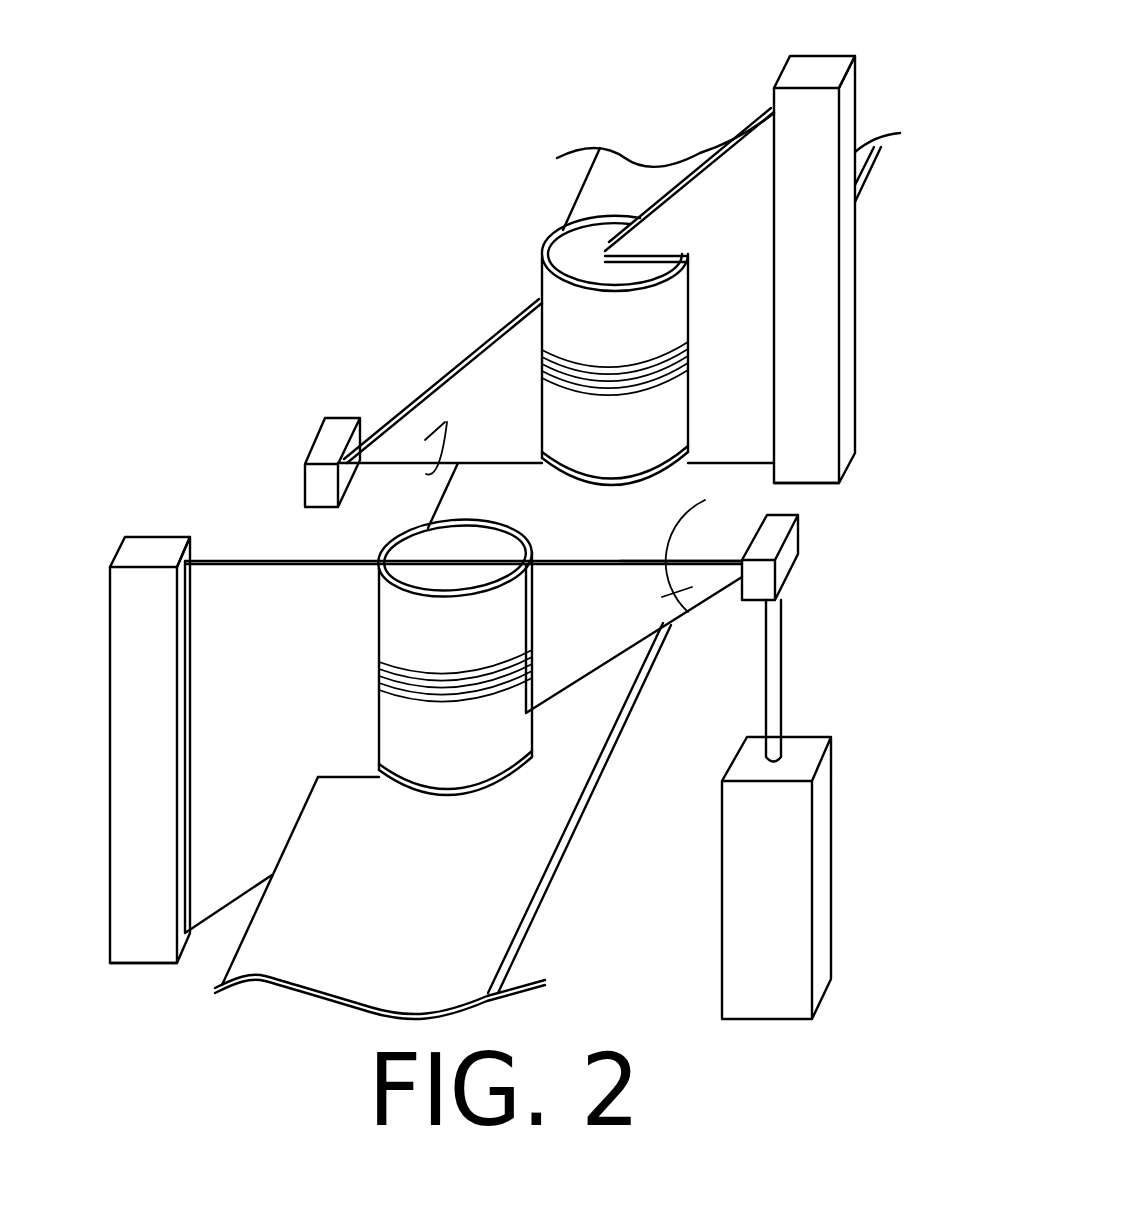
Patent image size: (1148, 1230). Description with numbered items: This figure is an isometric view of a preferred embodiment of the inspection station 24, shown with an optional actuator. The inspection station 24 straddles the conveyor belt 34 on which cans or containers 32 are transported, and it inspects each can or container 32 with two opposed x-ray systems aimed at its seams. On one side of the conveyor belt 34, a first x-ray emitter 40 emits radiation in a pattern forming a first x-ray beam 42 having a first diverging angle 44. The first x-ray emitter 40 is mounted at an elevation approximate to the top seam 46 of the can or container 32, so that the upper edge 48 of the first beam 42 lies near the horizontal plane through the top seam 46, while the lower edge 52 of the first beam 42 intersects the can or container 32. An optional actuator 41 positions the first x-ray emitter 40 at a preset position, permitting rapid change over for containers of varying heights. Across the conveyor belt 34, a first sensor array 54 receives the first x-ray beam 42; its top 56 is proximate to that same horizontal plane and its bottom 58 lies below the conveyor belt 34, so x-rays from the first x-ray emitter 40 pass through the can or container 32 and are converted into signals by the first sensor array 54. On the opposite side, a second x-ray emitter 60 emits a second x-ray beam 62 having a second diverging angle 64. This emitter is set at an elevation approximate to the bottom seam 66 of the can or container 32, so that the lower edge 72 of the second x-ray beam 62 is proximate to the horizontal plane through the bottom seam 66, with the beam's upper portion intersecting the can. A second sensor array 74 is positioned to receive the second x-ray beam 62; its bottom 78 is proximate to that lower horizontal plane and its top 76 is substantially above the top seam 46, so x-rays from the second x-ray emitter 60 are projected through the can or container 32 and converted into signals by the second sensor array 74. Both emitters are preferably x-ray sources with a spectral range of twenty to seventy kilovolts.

The inspection station 24 is at (503, 101).
The can or container 32 is at (580, 240).
The conveyor belt 34 is at (487, 957).
The first x-ray emitter 40 is at (783, 569).
The actuator 41 is at (823, 833).
The first x-ray beam 42 is at (262, 589).
The first diverging angle 44 is at (653, 597).
The top seam 46 is at (547, 257).
The upper edge 48 is at (660, 560).
The lower edge 52 is at (225, 910).
The first sensor array 54 is at (138, 773).
The top 56 is at (153, 550).
The bottom 58 is at (150, 968).
The second x-ray emitter 60 is at (303, 460).
The second x-ray beam 62 is at (472, 382).
The second diverging angle 64 is at (447, 420).
The bottom seam 66 is at (645, 480).
The lower edge 72 is at (426, 474).
The second sensor array 74 is at (850, 298).
The top 76 is at (813, 72).
The bottom 78 is at (850, 470).